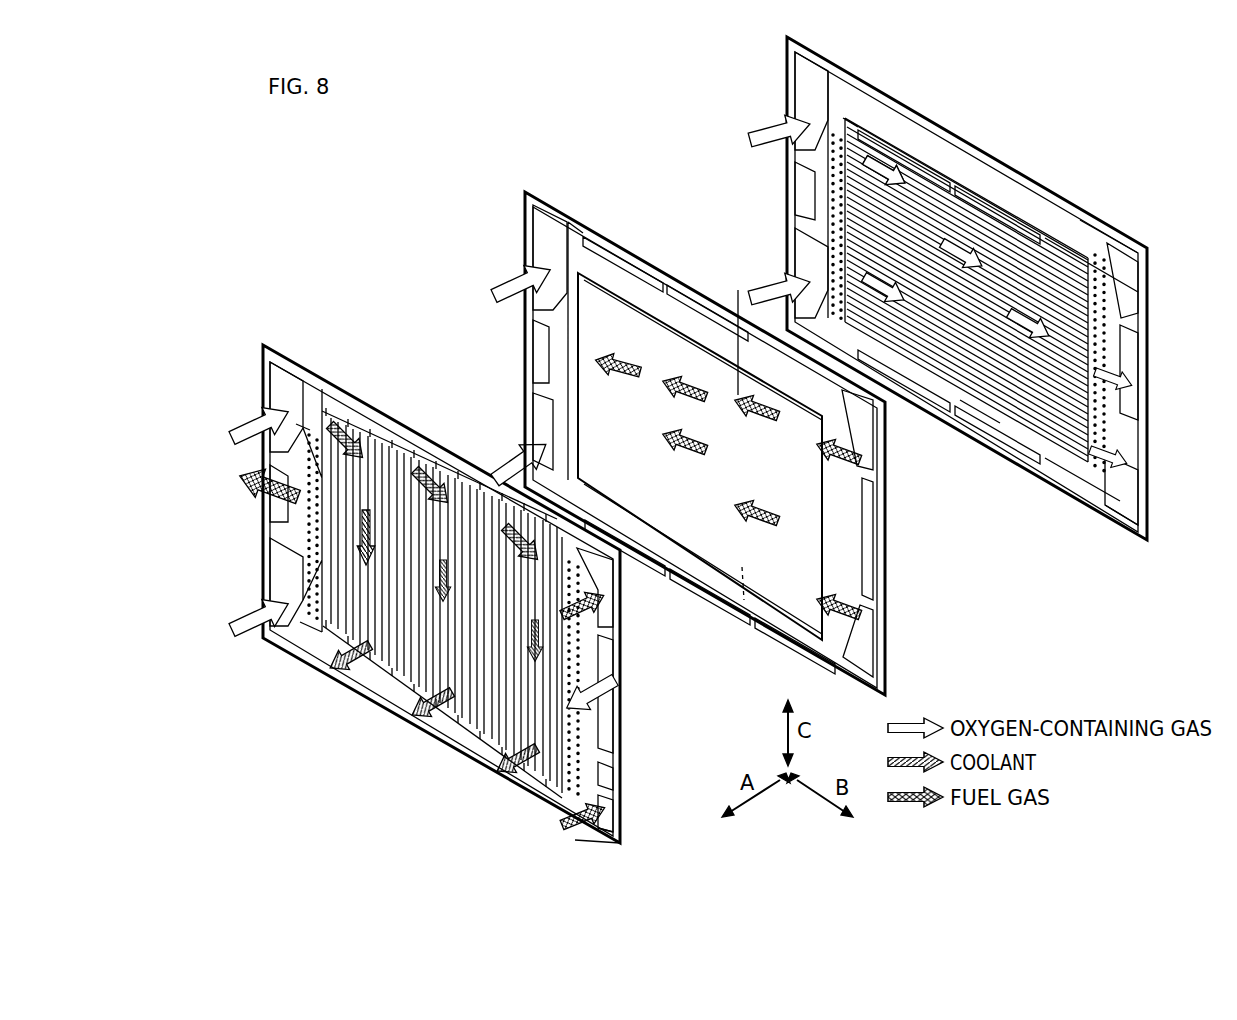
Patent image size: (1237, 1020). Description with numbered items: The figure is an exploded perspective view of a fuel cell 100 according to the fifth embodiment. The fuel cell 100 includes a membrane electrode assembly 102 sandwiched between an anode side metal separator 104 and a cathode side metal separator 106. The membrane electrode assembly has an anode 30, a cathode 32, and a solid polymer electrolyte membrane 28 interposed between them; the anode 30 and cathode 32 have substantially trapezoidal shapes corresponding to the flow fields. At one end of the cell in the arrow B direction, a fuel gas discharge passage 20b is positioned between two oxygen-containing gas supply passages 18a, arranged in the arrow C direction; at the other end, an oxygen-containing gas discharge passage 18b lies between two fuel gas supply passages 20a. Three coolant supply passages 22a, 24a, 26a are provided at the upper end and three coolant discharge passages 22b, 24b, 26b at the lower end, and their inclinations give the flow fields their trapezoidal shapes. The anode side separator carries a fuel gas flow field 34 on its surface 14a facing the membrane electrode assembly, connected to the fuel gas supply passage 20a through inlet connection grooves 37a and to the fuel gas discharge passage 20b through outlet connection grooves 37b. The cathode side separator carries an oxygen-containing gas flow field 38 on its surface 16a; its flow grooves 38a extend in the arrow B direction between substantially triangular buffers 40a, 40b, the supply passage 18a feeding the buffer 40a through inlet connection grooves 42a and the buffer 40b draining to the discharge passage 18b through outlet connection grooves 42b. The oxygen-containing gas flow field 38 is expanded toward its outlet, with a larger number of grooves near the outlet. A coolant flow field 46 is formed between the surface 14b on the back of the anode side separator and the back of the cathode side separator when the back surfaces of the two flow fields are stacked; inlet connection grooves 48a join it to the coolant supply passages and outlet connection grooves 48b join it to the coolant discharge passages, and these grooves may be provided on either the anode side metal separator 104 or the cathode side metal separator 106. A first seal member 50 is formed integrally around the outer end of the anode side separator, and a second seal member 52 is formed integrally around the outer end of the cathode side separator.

The fuel cell 100 is at (312, 192).
The membrane electrode assembly 102 is at (523, 192).
The anode side metal separator 104 is at (262, 344).
The cathode side metal separator 106 is at (785, 37).
The surface 14a is at (625, 833).
The surface 14b is at (622, 808).
The surface 16a is at (1120, 510).
The oxygen-containing gas supply passage 18a is at (285, 380).
The oxygen-containing gas discharge passage 18b is at (612, 735).
The fuel gas supply passage 20a is at (612, 620).
The fuel gas discharge passage 20b is at (270, 472).
The coolant supply passage 22a is at (345, 410).
The coolant discharge passage 22b is at (325, 663).
The coolant supply passage 24a is at (423, 455).
The coolant discharge passage 24b is at (412, 705).
The coolant supply passage 26a is at (508, 480).
The coolant discharge passage 26b is at (490, 760).
The solid polymer electrolyte membrane 28 is at (790, 630).
The anode 30 is at (698, 575).
The cathode 32 is at (737, 600).
The fuel gas flow field 34 is at (300, 420).
The inlet connection grooves 37a is at (606, 588).
The outlet connection grooves 37b is at (275, 543).
The oxygen-containing gas flow field 38 is at (940, 222).
The flow grooves 38a is at (1005, 385).
The buffer 40a is at (822, 213).
The buffer 40b is at (1135, 361).
The inlet connection grooves 42a is at (828, 160).
The outlet connection grooves 42b is at (1130, 428).
The coolant flow field 46 is at (300, 625).
The inlet connection grooves 48a is at (372, 440).
The outlet connection grooves 48b is at (440, 745).
The first seal member 50 is at (598, 835).
The second seal member 52 is at (1098, 225).